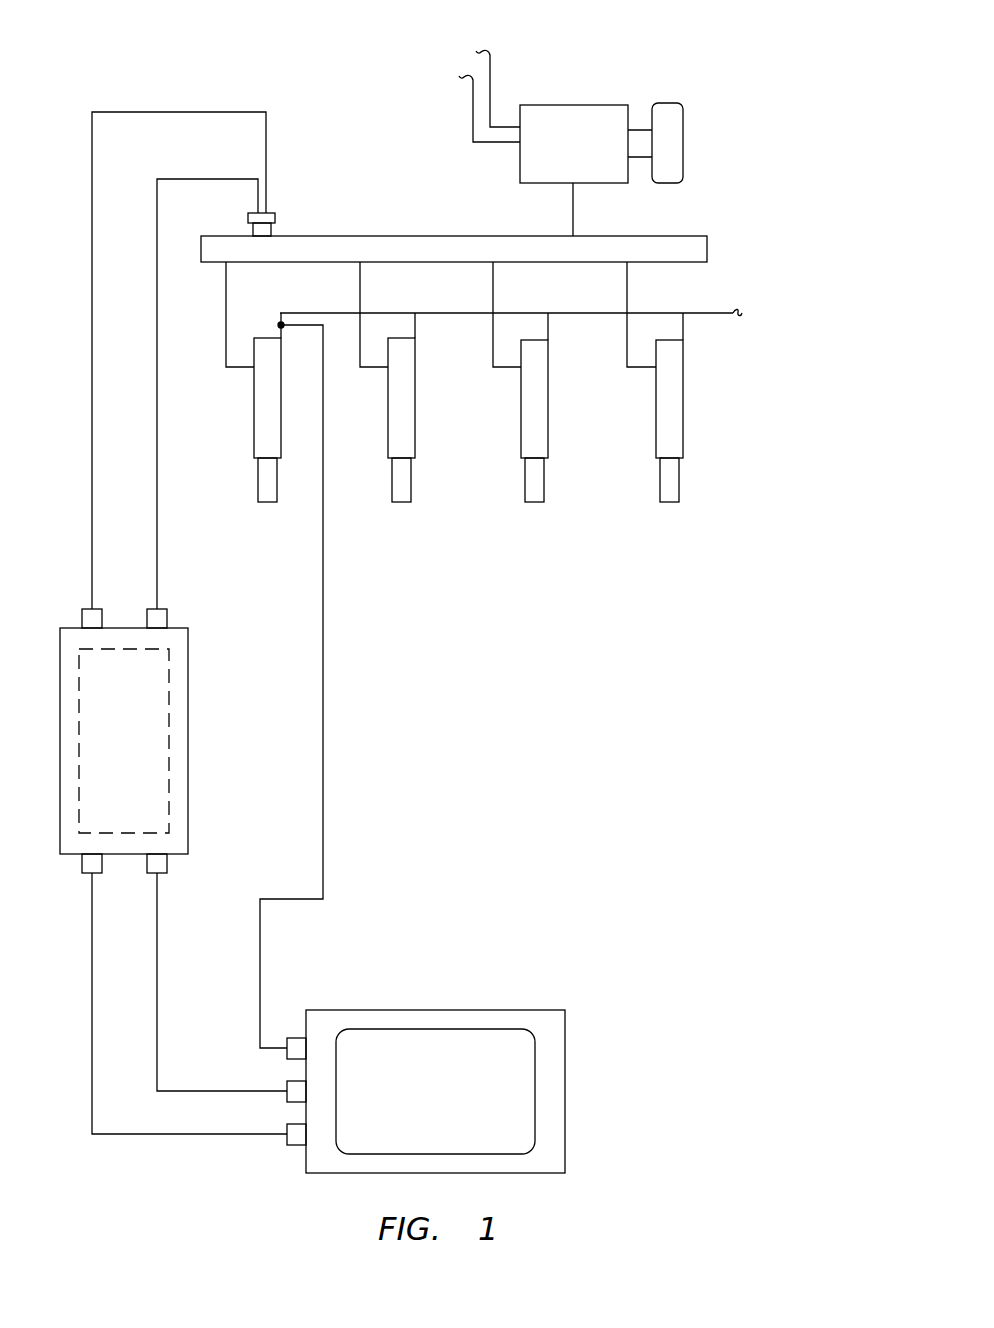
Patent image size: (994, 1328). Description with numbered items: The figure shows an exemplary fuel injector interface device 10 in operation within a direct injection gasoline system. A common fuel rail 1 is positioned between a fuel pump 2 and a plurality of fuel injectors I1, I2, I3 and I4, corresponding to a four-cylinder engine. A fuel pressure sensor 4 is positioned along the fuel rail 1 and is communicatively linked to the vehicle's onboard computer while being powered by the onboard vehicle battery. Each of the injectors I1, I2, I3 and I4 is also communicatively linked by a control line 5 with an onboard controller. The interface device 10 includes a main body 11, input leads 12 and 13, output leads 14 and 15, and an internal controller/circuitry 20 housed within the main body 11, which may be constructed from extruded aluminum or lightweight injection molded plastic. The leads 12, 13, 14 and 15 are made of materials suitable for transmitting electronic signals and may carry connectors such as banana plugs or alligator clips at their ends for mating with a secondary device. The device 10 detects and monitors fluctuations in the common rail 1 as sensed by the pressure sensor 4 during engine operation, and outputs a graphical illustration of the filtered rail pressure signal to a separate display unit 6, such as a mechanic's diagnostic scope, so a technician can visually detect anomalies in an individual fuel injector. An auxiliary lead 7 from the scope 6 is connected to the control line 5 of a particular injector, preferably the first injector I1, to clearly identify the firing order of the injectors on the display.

The fuel injector interface device 10 is at (113, 70).
The common fuel rail 1 is at (439, 247).
The fuel pump 2 is at (581, 155).
The fuel pressure sensor 4 is at (277, 222).
The control line 5 is at (707, 314).
The fuel injector I1 is at (252, 425).
The fuel injector I2 is at (415, 433).
The fuel injector I3 is at (548, 433).
The fuel injector I4 is at (683, 433).
The auxiliary lead 7 is at (325, 800).
The main body 11 is at (167, 741).
The internal controller/circuitry 20 is at (146, 784).
The input lead 12 is at (90, 540).
The input lead 13 is at (157, 540).
The output lead 14 is at (90, 918).
The output lead 15 is at (157, 918).
The display unit 6 is at (443, 1104).